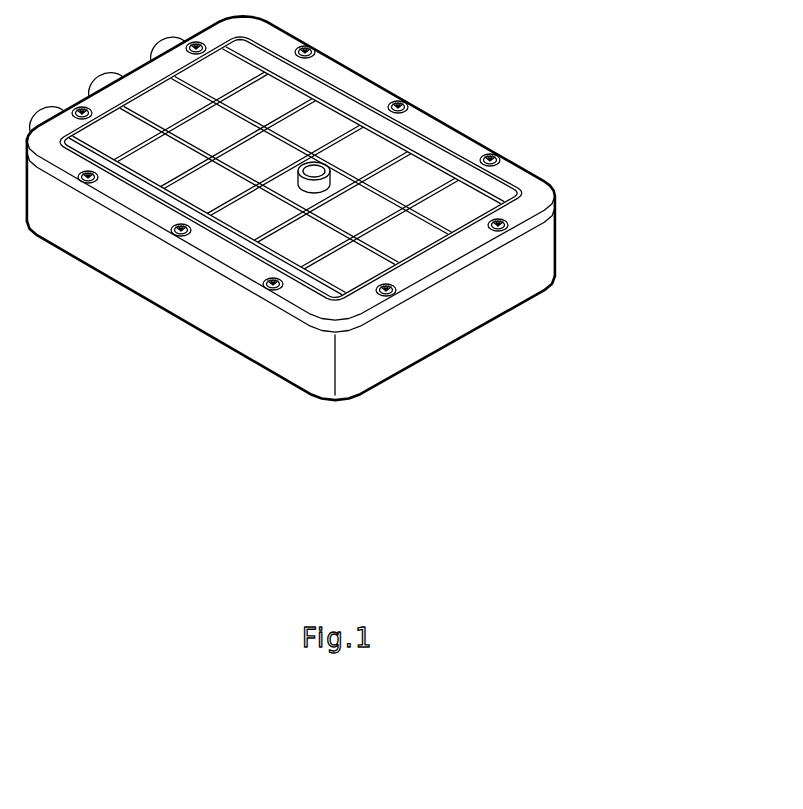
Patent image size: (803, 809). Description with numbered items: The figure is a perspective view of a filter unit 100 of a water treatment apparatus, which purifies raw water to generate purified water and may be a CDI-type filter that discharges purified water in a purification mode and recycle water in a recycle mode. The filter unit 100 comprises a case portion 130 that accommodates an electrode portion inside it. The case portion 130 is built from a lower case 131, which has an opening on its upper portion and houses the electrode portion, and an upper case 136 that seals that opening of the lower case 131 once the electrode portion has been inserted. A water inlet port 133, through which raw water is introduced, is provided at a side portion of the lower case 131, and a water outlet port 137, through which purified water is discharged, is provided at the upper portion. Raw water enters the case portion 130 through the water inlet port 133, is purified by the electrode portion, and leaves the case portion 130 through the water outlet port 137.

The filter unit 100 is at (138, 315).
The case portion 130 is at (655, 181).
The lower case 131 is at (545, 246).
The water inlet port 133 is at (107, 78).
The upper case 136 is at (542, 185).
The water outlet port 137 is at (316, 170).